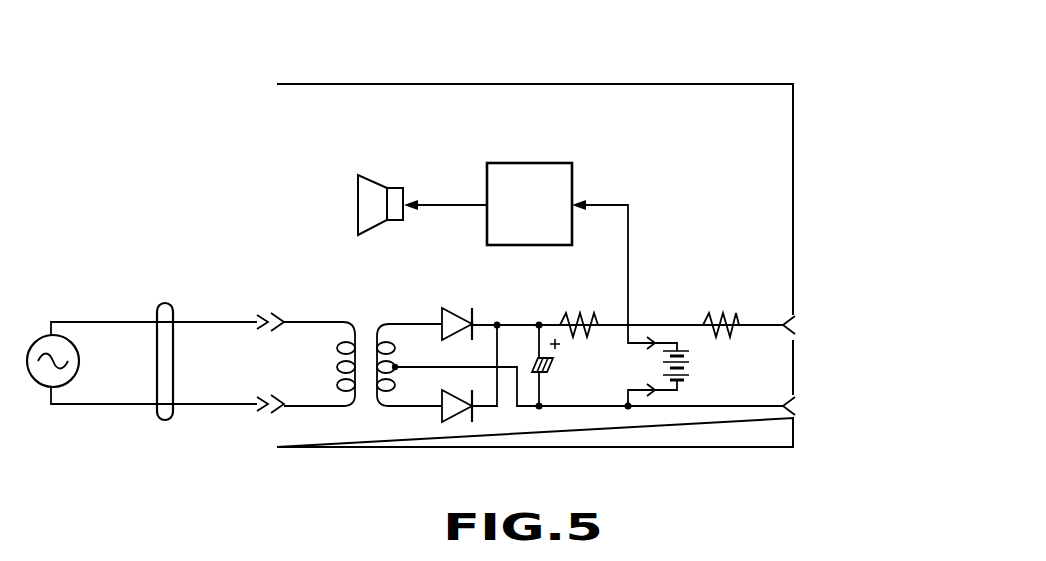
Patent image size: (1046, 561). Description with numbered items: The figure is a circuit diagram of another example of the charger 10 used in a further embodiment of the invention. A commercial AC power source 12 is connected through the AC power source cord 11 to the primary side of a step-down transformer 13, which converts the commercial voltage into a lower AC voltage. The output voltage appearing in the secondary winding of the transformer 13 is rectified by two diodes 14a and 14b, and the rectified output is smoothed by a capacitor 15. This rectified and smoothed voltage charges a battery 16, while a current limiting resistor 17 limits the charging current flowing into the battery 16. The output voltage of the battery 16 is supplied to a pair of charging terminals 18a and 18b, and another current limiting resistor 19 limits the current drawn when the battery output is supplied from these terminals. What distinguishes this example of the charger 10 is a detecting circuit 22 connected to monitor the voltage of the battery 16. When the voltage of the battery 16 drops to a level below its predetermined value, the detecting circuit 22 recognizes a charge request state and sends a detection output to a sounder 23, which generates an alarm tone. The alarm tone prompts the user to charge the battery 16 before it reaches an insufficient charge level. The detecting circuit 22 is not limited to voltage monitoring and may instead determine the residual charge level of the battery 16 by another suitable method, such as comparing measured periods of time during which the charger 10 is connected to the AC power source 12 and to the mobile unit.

The charger 10 is at (661, 80).
The AC power source cord 11 is at (174, 308).
The commercial AC power source 12 is at (40, 334).
The step-down transformer 13 is at (346, 394).
The diode 14a is at (460, 314).
The diode 14b is at (462, 421).
The capacitor 15 is at (553, 365).
The battery 16 is at (690, 368).
The current limiting resistor 17 is at (576, 313).
The charging terminal 18a is at (797, 325).
The charging terminal 18b is at (798, 415).
The current limiting resistor 19 is at (712, 313).
The detecting circuit 22 is at (571, 164).
The sounder 23 is at (380, 184).